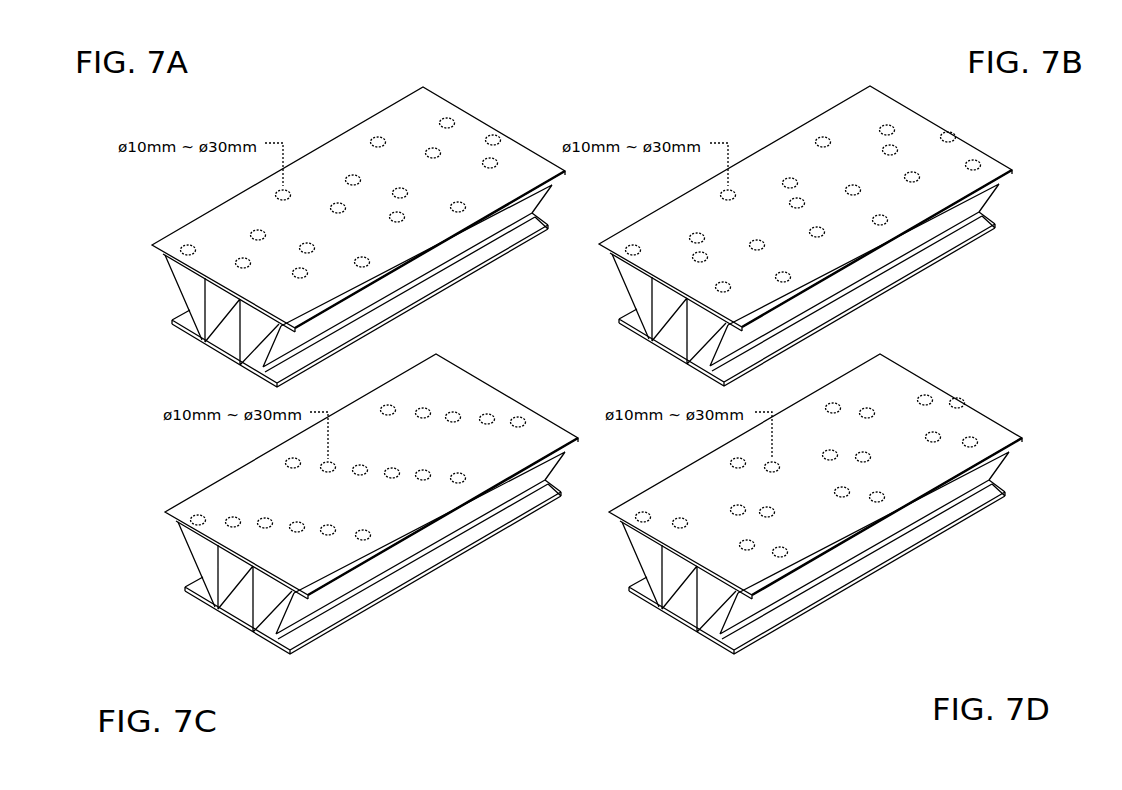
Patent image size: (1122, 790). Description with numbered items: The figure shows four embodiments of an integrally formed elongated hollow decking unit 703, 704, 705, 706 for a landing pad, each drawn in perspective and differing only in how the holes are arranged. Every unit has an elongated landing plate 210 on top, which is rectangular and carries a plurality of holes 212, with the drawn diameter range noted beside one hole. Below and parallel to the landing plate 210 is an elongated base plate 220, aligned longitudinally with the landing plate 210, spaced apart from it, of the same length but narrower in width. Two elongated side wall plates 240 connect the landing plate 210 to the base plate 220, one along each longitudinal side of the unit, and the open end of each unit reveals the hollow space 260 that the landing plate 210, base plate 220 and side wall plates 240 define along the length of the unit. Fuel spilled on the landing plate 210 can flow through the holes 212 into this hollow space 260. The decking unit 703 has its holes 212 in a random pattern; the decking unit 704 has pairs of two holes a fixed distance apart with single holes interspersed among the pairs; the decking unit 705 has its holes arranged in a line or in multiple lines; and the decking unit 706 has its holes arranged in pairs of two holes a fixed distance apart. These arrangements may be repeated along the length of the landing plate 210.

In FIG. 7A, the elongated landing plate 210 is at (468, 125).
In FIG. 7B, the elongated landing plate 210 is at (960, 152).
In FIG. 7C, the elongated landing plate 210 is at (505, 412).
In FIG. 7D, the elongated landing plate 210 is at (925, 470).
In FIG. 7A, the plurality of holes 212 is at (447, 118).
In FIG. 7B, the plurality of holes 212 is at (822, 137).
In FIG. 7C, the plurality of holes 212 is at (452, 411).
In FIG. 7D, the plurality of holes 212 is at (983, 444).
In FIG. 7A, the elongated base plate 220 is at (228, 343).
In FIG. 7B, the elongated base plate 220 is at (672, 343).
In FIG. 7C, the elongated base plate 220 is at (240, 605).
In FIG. 7D, the elongated base plate 220 is at (680, 615).
In FIG. 7A, the elongated side wall plates 240 is at (498, 220).
In FIG. 7B, the elongated side wall plates 240 is at (837, 278).
In FIG. 7C, the elongated side wall plates 240 is at (475, 507).
In FIG. 7D, the elongated side wall plates 240 is at (827, 560).
In FIG. 7A, the hollow space 260 is at (222, 298).
In FIG. 7B, the hollow space 260 is at (662, 295).
In FIG. 7C, the hollow space 260 is at (235, 570).
In FIG. 7D, the hollow space 260 is at (680, 578).
In FIG. 7A, the elongated hollow decking unit 703 is at (553, 108).
In FIG. 7B, the elongated hollow decking unit 704 is at (895, 80).
In FIG. 7C, the elongated hollow decking unit 705 is at (175, 472).
In FIG. 7D, the elongated hollow decking unit 706 is at (962, 390).